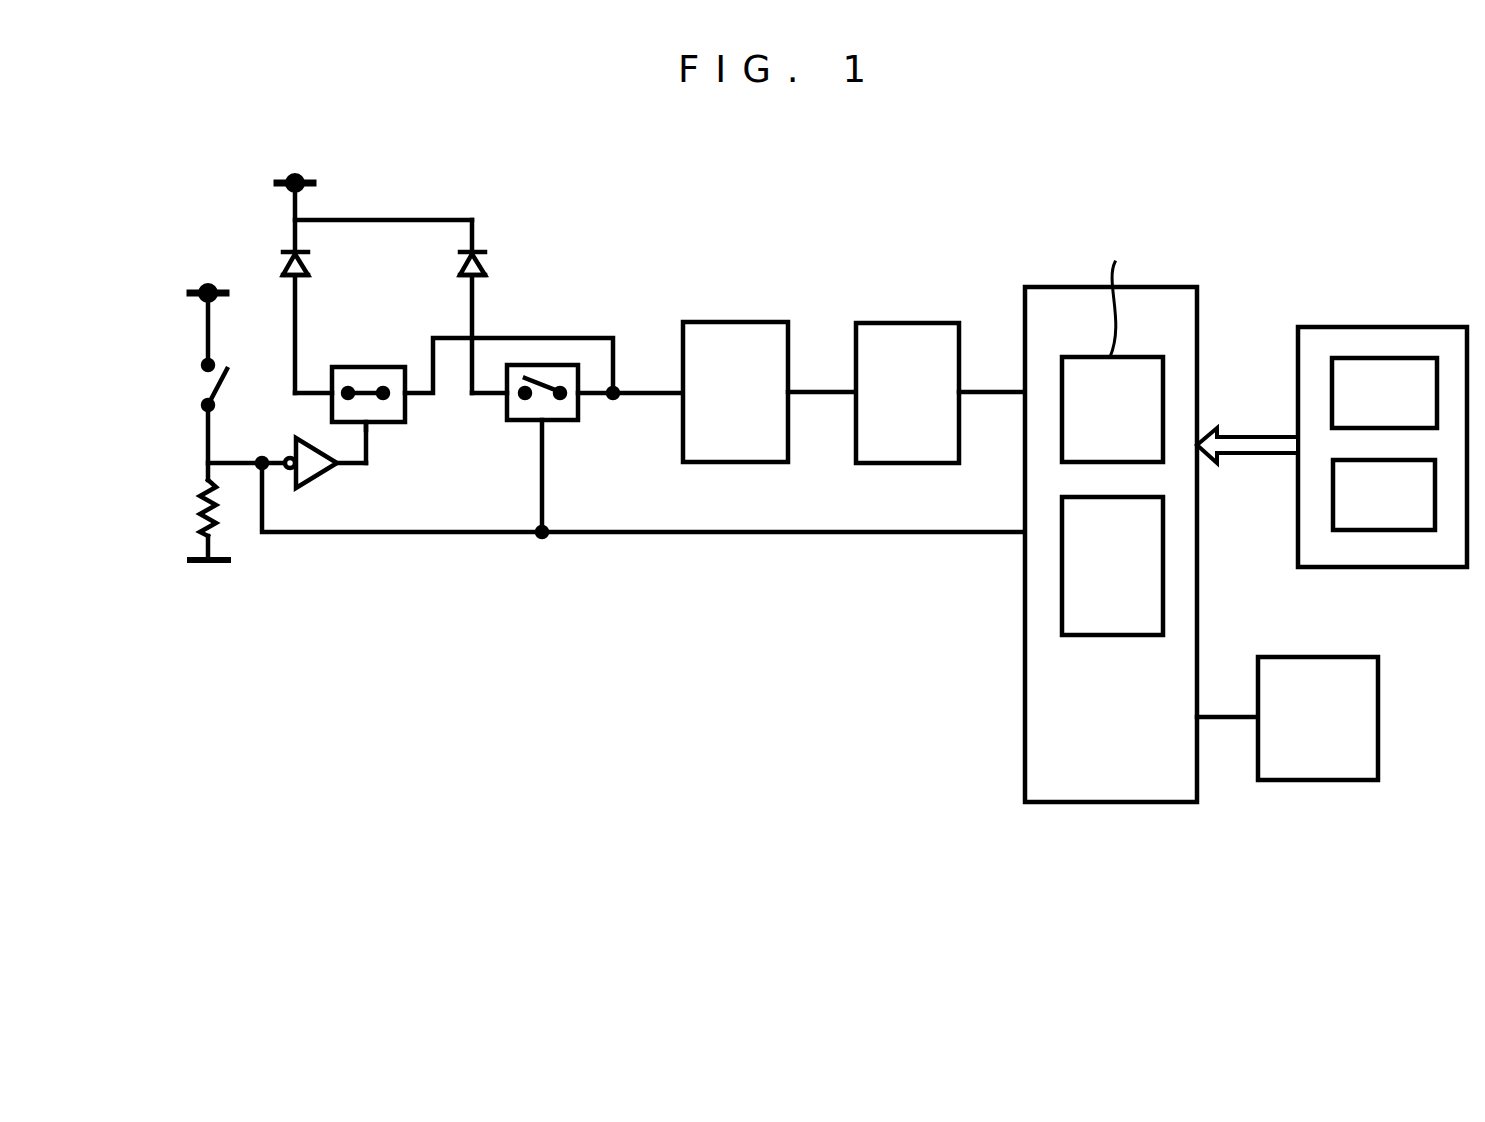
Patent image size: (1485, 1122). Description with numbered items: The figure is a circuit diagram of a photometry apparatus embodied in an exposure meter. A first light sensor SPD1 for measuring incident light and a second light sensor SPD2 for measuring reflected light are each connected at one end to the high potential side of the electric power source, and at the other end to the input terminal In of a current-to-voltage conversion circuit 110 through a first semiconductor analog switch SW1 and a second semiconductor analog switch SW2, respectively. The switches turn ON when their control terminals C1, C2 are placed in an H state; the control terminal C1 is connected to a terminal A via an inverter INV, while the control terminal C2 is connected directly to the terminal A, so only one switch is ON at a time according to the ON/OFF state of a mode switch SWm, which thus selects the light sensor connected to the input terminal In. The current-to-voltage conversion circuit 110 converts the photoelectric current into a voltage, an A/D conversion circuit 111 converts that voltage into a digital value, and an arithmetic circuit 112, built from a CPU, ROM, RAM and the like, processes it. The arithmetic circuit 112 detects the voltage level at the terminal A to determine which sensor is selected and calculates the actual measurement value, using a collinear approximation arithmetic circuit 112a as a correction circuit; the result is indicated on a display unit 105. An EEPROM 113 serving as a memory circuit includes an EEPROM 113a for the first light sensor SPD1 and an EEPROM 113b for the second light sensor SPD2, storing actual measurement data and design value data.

The current-to-voltage conversion circuit 110 is at (747, 322).
The A/D conversion circuit 111 is at (905, 323).
The arithmetic circuit 112 is at (1100, 802).
The collinear approximation arithmetic circuit 112a is at (1062, 567).
The EEPROM 113 is at (1298, 330).
The EEPROM for the first light sensor 113a is at (1385, 358).
The EEPROM for the second light sensor 113b is at (1382, 530).
The display unit 105 is at (1318, 780).
The first light sensor SPD1 is at (288, 268).
The second light sensor SPD2 is at (488, 267).
The mode switch SWm is at (215, 387).
The first semiconductor analog switch SW1 is at (350, 367).
The second semiconductor analog switch SW2 is at (555, 425).
The control terminal C1 is at (370, 425).
The control terminal C2 is at (532, 425).
The inverter INV is at (313, 480).
The terminal A is at (205, 463).